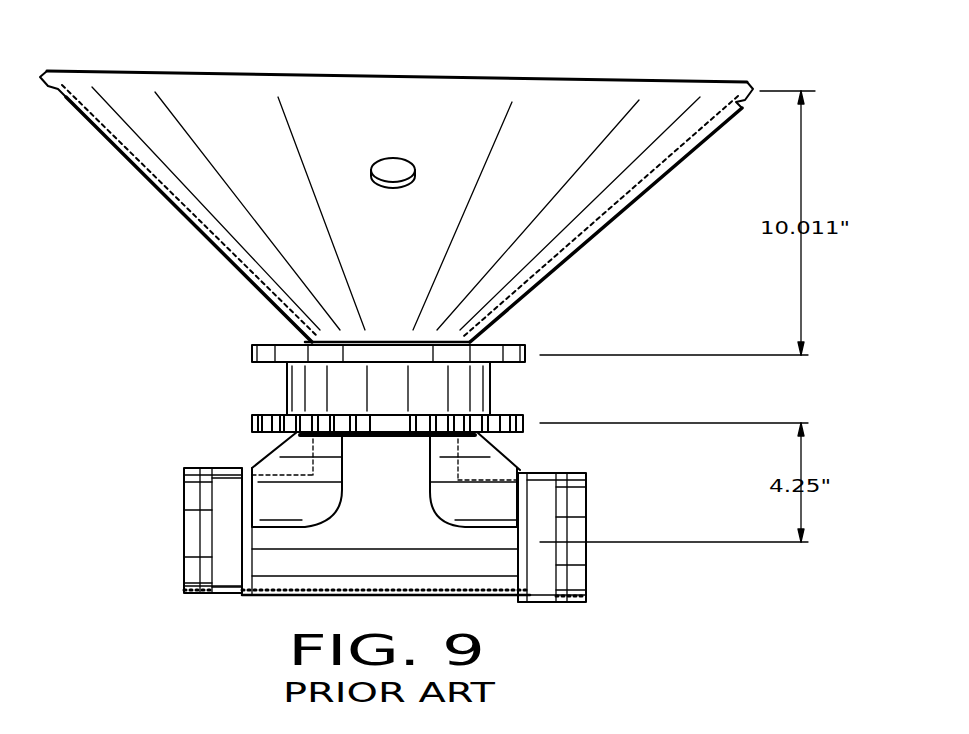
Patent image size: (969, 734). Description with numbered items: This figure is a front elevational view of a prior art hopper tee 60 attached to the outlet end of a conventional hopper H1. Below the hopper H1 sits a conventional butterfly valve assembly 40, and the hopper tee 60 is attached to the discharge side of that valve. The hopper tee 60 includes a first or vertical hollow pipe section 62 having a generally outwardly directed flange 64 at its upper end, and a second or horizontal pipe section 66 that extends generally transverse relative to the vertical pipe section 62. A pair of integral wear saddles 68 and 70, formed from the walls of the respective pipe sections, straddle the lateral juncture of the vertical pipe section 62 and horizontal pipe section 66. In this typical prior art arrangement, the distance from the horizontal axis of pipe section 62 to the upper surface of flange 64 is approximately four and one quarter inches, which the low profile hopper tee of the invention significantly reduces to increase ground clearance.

The hopper H1 is at (593, 133).
The butterfly valve assembly 40 is at (455, 403).
The flange 64 is at (258, 417).
The vertical hollow pipe section 62 is at (268, 455).
The prior art hopper tee 60 is at (541, 463).
The wear saddle 70 is at (300, 511).
The wear saddle 68 is at (492, 511).
The horizontal pipe section 66 is at (263, 597).